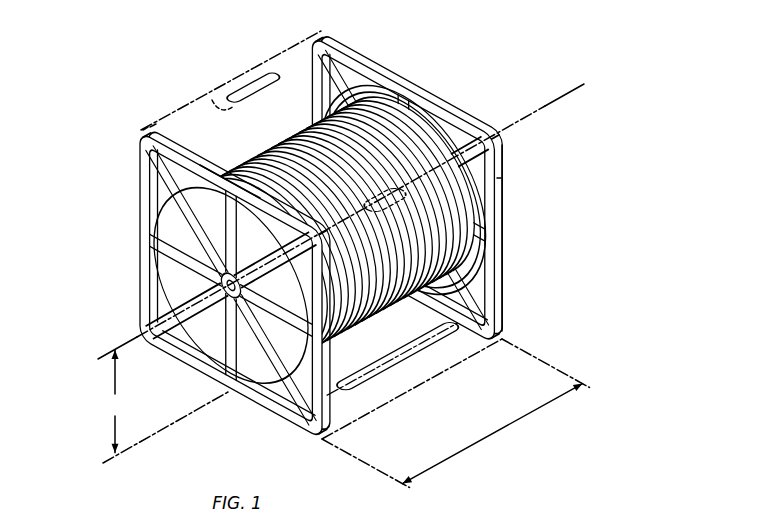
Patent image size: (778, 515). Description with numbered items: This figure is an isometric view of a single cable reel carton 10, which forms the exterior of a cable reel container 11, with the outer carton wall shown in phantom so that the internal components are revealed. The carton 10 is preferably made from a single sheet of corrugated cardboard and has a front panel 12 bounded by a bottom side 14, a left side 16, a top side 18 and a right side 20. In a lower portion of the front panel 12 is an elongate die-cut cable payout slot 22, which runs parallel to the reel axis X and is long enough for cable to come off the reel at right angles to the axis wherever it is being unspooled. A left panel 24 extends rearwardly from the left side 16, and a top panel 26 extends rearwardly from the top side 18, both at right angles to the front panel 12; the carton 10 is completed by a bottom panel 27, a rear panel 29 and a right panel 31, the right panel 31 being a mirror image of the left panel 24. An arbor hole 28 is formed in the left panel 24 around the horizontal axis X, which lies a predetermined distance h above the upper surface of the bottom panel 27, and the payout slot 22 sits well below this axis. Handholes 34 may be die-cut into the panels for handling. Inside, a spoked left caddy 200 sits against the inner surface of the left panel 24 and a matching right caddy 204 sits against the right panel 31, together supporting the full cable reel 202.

The cable reel carton 10 is at (343, 251).
The cable reel container 11 is at (552, 58).
The front panel 12 is at (388, 327).
The bottom side 14 is at (375, 411).
The left side 16 is at (207, 276).
The top side 18 is at (404, 181).
The right side 20 is at (504, 238).
The cable payout slot 22 is at (424, 354).
The left panel 24 is at (178, 292).
The top panel 26 is at (288, 127).
The bottom panel 27 is at (464, 362).
The arbor hole 28 is at (232, 279).
The rear panel 29 is at (153, 126).
The right panel 31 is at (403, 78).
The handholes 34 is at (428, 165).
The left caddy 200 is at (140, 156).
The cable reel 202 is at (240, 176).
The right caddy 204 is at (318, 44).